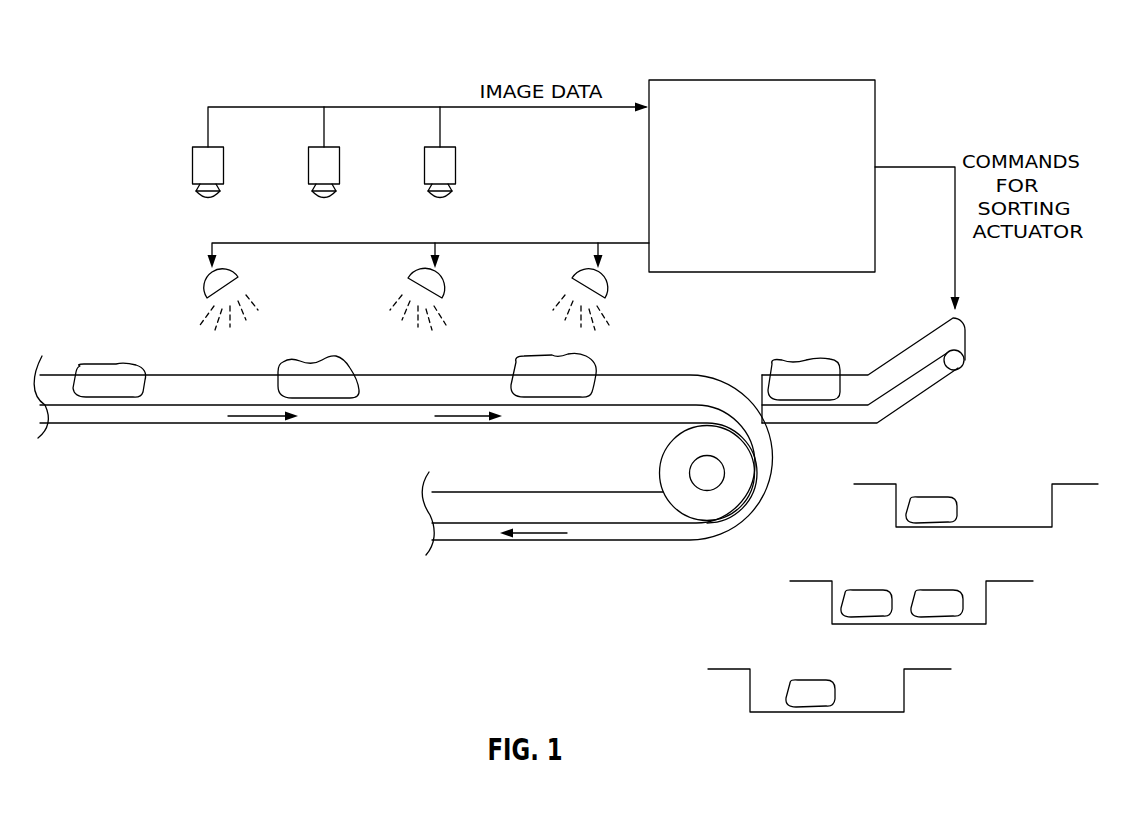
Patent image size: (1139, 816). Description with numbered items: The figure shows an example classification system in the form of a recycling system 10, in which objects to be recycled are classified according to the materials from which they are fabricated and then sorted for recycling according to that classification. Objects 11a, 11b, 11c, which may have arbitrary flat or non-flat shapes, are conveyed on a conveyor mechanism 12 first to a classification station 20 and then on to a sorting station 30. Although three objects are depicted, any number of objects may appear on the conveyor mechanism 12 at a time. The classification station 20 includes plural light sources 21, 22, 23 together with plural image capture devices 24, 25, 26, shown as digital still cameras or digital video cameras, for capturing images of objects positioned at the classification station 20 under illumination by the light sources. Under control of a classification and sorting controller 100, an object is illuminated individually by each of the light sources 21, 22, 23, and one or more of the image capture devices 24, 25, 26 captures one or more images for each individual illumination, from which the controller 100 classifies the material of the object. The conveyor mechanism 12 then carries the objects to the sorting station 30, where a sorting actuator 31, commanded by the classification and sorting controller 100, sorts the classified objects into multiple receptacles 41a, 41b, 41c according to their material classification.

The recycling system 10 is at (90, 125).
The classification and sorting controller 100 is at (764, 80).
The image capture device 24 is at (192, 160).
The image capture device 25 is at (308, 160).
The image capture device 26 is at (424, 160).
The light source 21 is at (204, 281).
The light source 22 is at (443, 283).
The light source 23 is at (608, 284).
The object 11a is at (106, 363).
The object 11b is at (316, 360).
The object 11c is at (556, 355).
The conveyor mechanism 12 is at (155, 414).
The classification station 20 is at (300, 442).
The sorting station 30 is at (982, 372).
The sorting actuator 31 is at (905, 394).
The receptacle 41a is at (1052, 505).
The receptacle 41b is at (986, 600).
The receptacle 41c is at (904, 690).